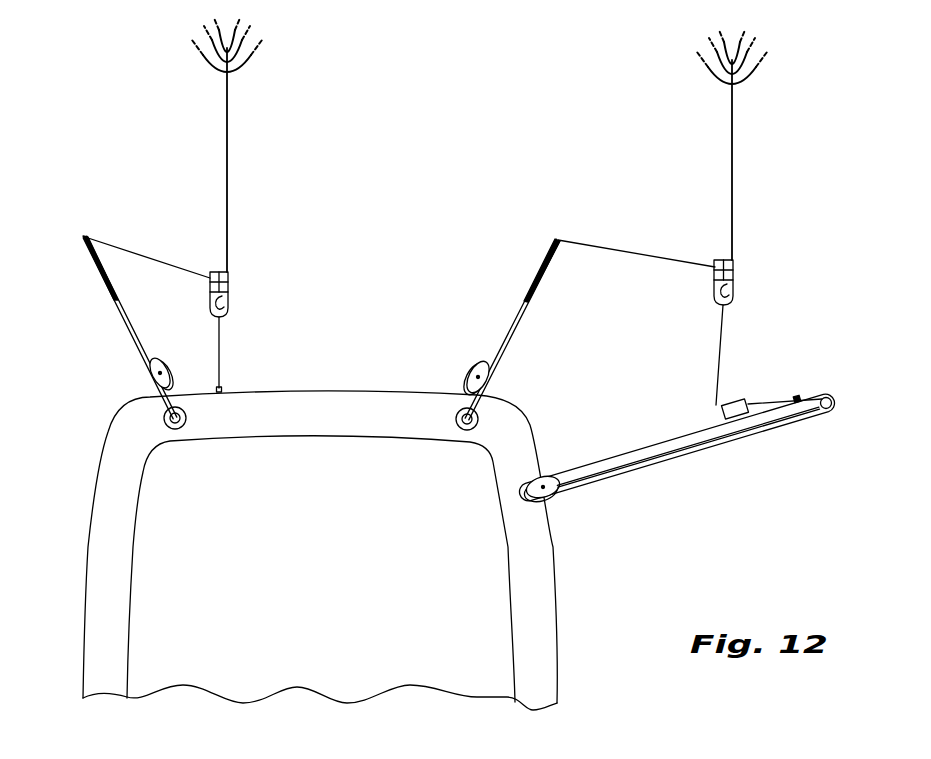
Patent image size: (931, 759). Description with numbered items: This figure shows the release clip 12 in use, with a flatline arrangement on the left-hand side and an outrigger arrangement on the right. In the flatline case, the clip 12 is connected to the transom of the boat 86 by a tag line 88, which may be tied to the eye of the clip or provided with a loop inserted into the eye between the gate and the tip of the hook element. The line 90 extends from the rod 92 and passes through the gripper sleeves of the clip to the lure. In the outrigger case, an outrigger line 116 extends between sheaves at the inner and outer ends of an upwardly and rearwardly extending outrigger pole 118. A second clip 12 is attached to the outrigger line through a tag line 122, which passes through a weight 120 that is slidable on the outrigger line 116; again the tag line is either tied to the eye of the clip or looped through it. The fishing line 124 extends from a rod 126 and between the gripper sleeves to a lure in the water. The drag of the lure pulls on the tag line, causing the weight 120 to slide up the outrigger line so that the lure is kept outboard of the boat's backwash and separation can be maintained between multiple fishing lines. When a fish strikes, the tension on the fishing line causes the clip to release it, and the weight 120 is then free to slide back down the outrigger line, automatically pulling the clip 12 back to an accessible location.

The clip 12 is at (238, 284).
The boat 86 is at (112, 465).
The tag line 88 is at (221, 370).
The line 90 is at (127, 250).
The rod 92 is at (108, 292).
The outrigger line 116 is at (636, 448).
The outrigger pole 118 is at (672, 462).
The weight 120 is at (733, 397).
The tag line 122 is at (722, 338).
The fishing line 124 is at (603, 246).
The rod 126 is at (520, 321).